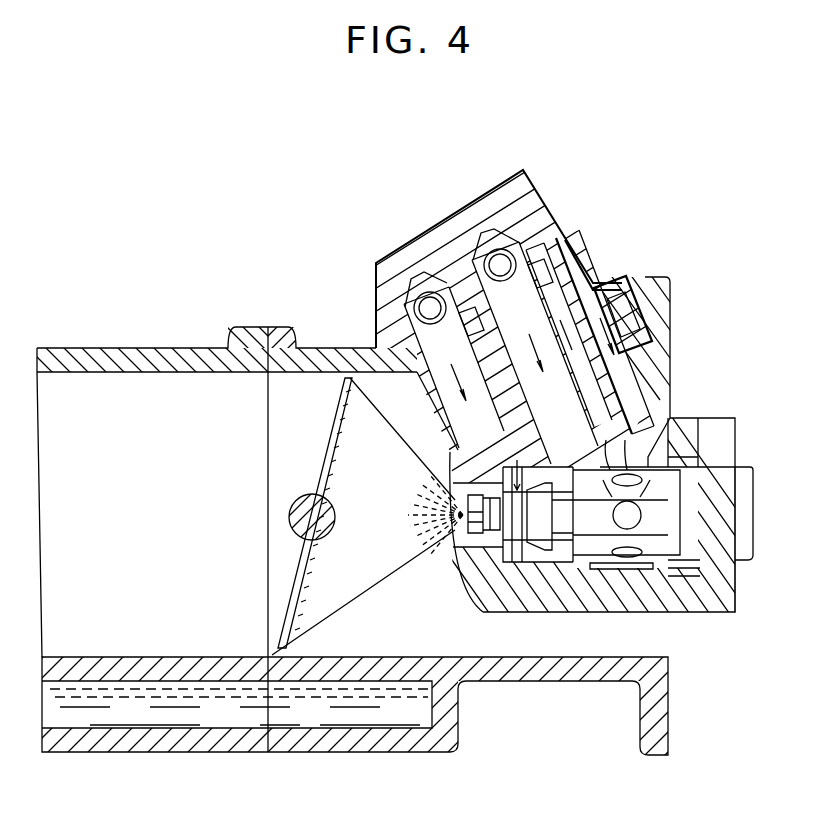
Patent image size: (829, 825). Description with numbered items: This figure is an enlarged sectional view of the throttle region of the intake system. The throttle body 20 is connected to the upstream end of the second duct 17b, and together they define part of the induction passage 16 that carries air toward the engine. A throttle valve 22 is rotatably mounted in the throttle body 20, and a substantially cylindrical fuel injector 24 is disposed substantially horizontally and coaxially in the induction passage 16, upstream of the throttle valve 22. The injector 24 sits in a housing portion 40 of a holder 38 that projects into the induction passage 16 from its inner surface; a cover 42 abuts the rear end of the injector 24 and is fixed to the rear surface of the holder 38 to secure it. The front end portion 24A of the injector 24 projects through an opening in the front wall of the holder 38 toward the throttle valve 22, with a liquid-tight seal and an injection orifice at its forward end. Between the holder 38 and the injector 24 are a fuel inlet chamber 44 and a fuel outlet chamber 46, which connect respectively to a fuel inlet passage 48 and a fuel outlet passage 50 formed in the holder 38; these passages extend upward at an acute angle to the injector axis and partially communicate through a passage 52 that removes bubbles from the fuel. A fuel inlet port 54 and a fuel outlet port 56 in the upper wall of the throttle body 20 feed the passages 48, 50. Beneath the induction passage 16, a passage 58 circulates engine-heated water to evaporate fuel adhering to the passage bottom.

The induction passage 16 is at (93, 388).
The second duct 17b is at (170, 348).
The throttle body 20 is at (325, 348).
The throttle valve 22 is at (335, 412).
The fuel injector 24 is at (685, 460).
The front end portion 24A is at (457, 528).
The holder 38 is at (690, 603).
The housing portion 40 is at (555, 557).
The cover 42 is at (735, 587).
The fuel inlet chamber 44 is at (528, 553).
The fuel outlet chamber 46 is at (640, 570).
The fuel inlet passage 48 is at (550, 333).
The fuel outlet passage 50 is at (597, 290).
The passage 52 is at (640, 368).
The fuel inlet port 54 is at (427, 303).
The fuel outlet port 56 is at (493, 257).
The passage for heated water 58 is at (380, 715).